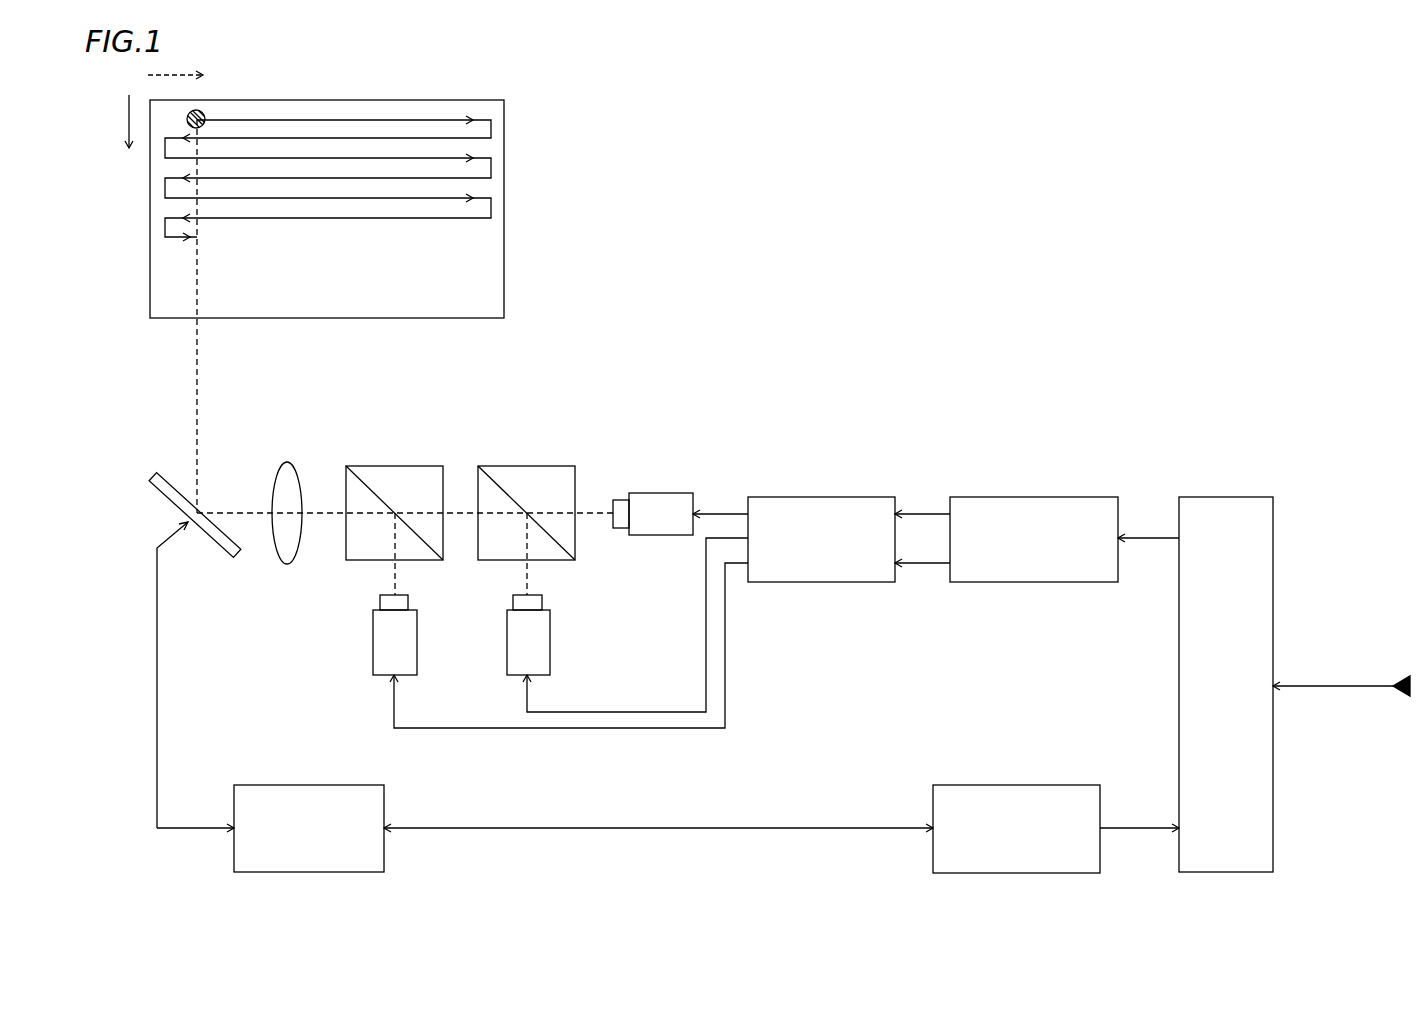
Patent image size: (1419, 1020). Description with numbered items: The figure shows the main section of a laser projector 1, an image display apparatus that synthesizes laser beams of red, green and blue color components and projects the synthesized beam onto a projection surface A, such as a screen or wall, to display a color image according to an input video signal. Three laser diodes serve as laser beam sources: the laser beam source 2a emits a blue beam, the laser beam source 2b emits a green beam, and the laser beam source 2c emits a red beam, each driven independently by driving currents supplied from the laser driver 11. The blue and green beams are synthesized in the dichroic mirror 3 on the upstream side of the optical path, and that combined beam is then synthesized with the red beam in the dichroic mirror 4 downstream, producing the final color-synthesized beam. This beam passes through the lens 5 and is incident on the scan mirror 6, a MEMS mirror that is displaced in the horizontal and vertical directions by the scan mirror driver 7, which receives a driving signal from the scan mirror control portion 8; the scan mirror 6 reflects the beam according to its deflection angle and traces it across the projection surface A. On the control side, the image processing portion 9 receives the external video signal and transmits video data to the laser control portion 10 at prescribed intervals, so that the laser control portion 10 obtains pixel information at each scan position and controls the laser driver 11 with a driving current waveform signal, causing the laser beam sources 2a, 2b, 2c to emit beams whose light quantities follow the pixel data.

The laser projector 1 is at (928, 338).
The laser beam source 2a is at (660, 493).
The laser beam source 2b is at (550, 640).
The laser beam source 2c is at (417, 640).
The dichroic mirror 3 is at (527, 466).
The dichroic mirror 4 is at (395, 466).
The lens 5 is at (287, 463).
The scan mirror 6 is at (233, 558).
The scan mirror driver 7 is at (308, 785).
The scan mirror control portion 8 is at (1017, 785).
The image processing portion 9 is at (1212, 497).
The laser control portion 10 is at (1034, 497).
The laser driver 11 is at (822, 497).
The projection surface A is at (505, 203).